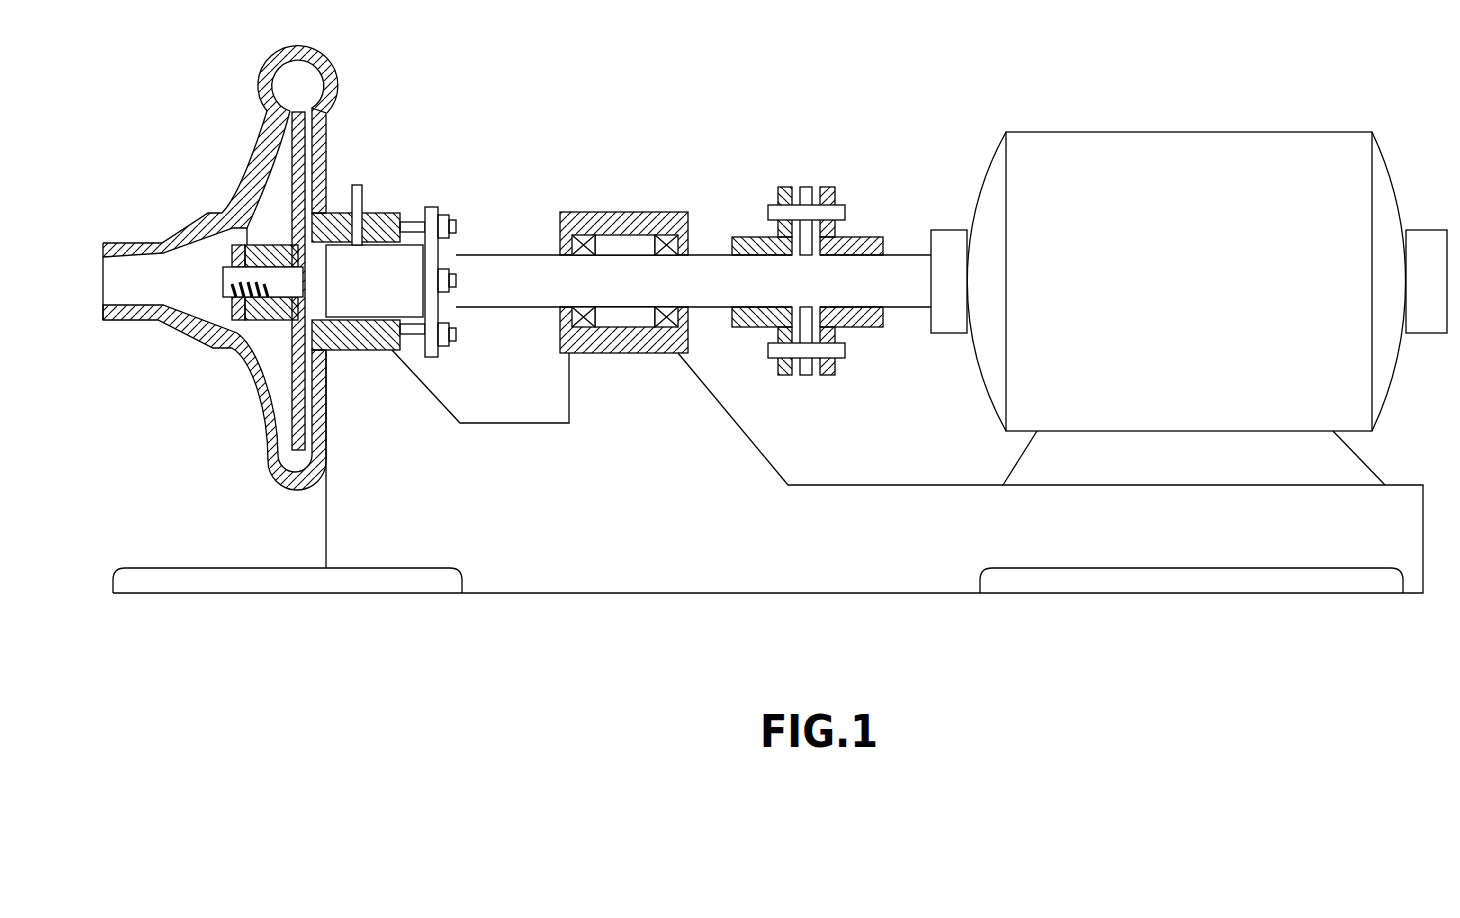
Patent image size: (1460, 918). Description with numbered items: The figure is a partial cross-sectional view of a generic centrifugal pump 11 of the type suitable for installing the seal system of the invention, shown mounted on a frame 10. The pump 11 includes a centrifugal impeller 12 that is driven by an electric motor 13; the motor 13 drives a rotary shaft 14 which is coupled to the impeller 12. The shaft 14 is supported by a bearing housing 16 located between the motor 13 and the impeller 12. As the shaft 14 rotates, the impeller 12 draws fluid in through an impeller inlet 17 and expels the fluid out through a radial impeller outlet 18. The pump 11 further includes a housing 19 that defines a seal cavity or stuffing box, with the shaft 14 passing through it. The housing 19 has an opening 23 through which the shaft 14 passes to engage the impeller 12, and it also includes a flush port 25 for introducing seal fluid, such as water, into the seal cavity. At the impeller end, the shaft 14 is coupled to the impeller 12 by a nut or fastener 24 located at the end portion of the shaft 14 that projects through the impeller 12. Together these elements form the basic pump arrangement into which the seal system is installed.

The frame 10 is at (848, 553).
The centrifugal pump 11 is at (419, 148).
The centrifugal impeller 12 is at (285, 353).
The electric motor 13 is at (1160, 150).
The rotary shaft 14 is at (520, 278).
The bearing housing 16 is at (636, 347).
The impeller inlet 17 is at (113, 290).
The radial impeller outlet 18 is at (292, 80).
The housing 19 is at (400, 273).
The opening 23 is at (327, 278).
The nut or fastener 24 is at (233, 243).
The flush port 25 is at (363, 190).